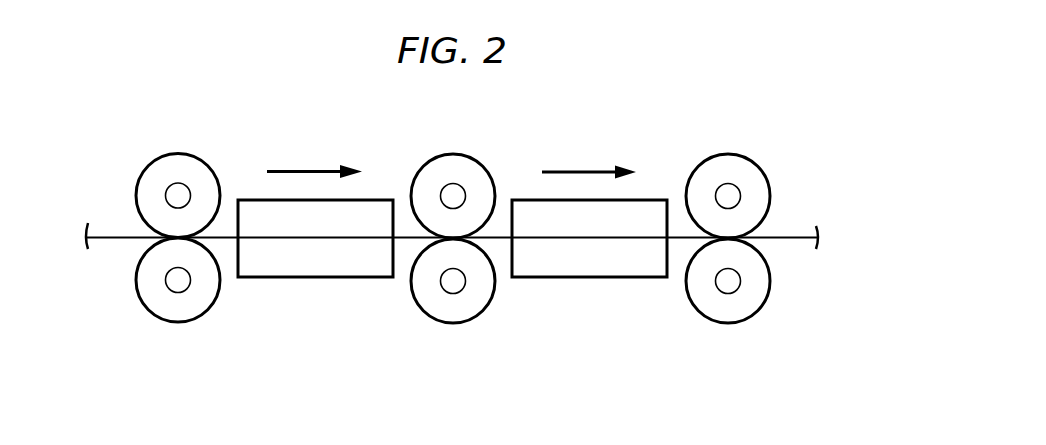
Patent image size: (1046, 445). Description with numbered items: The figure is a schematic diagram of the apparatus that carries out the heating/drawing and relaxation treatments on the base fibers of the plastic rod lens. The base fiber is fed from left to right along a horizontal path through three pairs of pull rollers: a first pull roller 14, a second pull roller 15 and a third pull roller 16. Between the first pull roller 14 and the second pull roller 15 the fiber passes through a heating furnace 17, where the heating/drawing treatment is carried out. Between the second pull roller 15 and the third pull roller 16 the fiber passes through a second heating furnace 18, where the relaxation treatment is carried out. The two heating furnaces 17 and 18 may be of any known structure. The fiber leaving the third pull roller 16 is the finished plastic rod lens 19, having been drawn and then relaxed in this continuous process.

The first pull roller 14 is at (163, 308).
The second pull roller 15 is at (450, 312).
The third pull roller 16 is at (740, 312).
The heating furnace (drawing) 17 is at (320, 270).
The heating furnace (relaxation) 18 is at (587, 270).
The plastic rod lens 19 is at (792, 237).